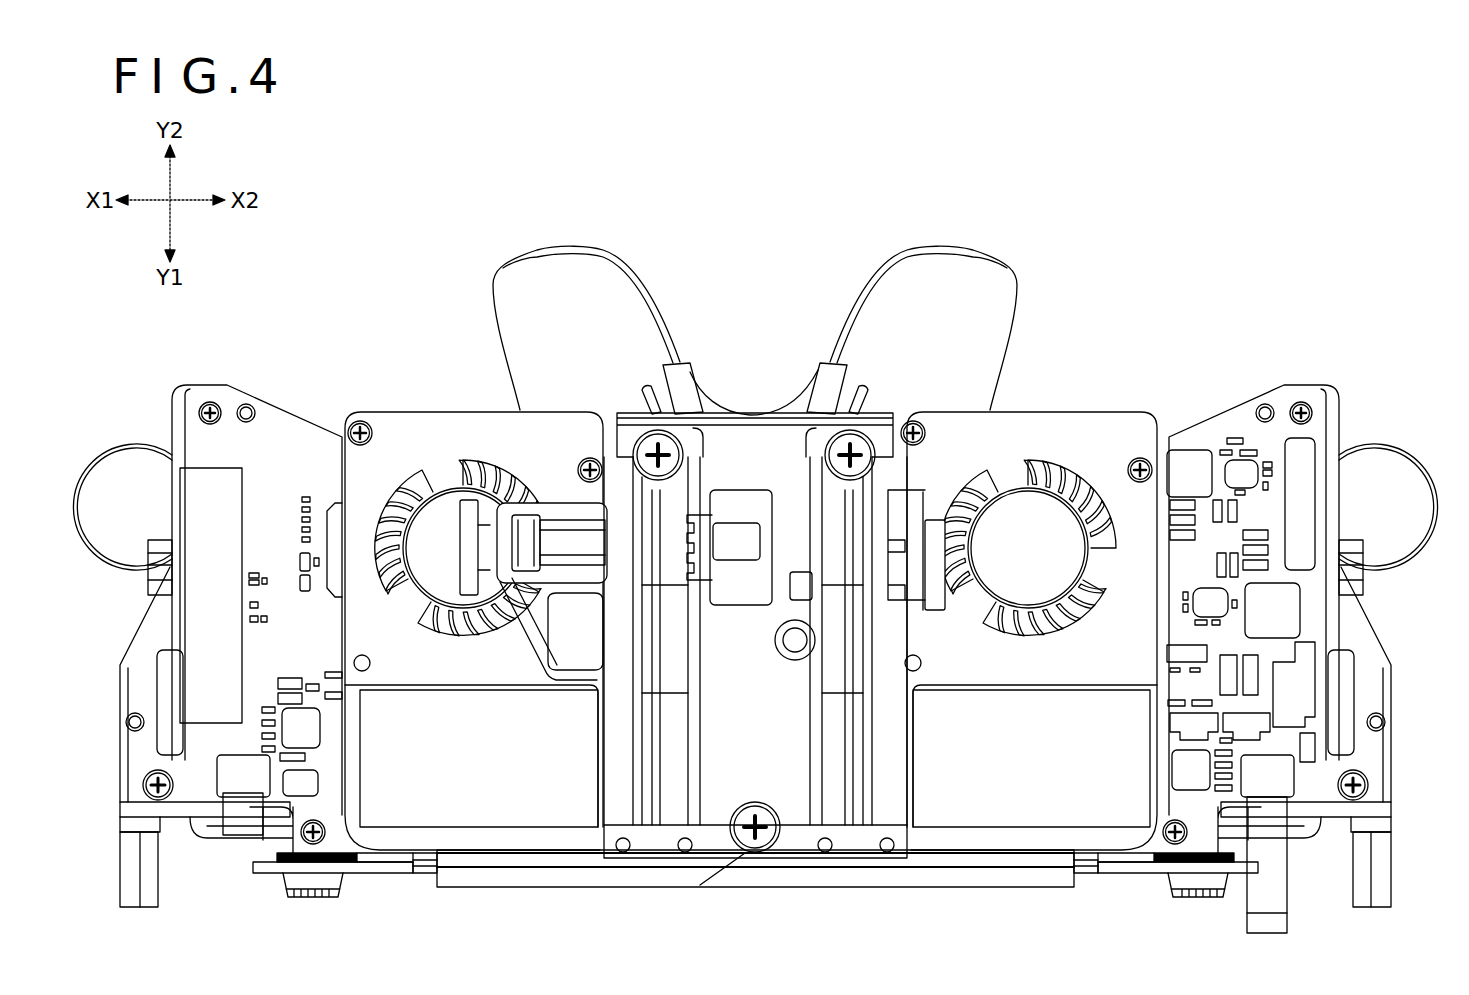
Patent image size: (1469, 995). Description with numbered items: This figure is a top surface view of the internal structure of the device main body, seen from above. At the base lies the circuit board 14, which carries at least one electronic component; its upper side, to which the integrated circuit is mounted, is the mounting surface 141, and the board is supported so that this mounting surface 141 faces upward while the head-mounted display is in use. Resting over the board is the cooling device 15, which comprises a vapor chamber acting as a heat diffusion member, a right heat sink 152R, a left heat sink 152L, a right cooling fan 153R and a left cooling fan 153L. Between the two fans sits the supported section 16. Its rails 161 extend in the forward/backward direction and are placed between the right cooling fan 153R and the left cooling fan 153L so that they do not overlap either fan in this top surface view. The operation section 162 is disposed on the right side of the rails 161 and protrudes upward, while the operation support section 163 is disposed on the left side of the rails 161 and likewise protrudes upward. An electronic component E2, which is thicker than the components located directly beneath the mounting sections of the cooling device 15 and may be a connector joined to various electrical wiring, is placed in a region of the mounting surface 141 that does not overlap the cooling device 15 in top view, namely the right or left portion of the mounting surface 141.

The circuit board 14 is at (1199, 414).
The mounting surface 141 is at (1243, 413).
The cooling device 15 is at (1028, 409).
The right heat sink 152R is at (537, 793).
The left heat sink 152L is at (1088, 793).
The right cooling fan 153R is at (453, 460).
The left cooling fan 153L is at (1112, 440).
The supported section 16 is at (745, 480).
The rails 161 is at (638, 797).
The operation section 162 is at (467, 547).
The operation support section 163 is at (933, 595).
The electronic component E2 is at (1292, 680).